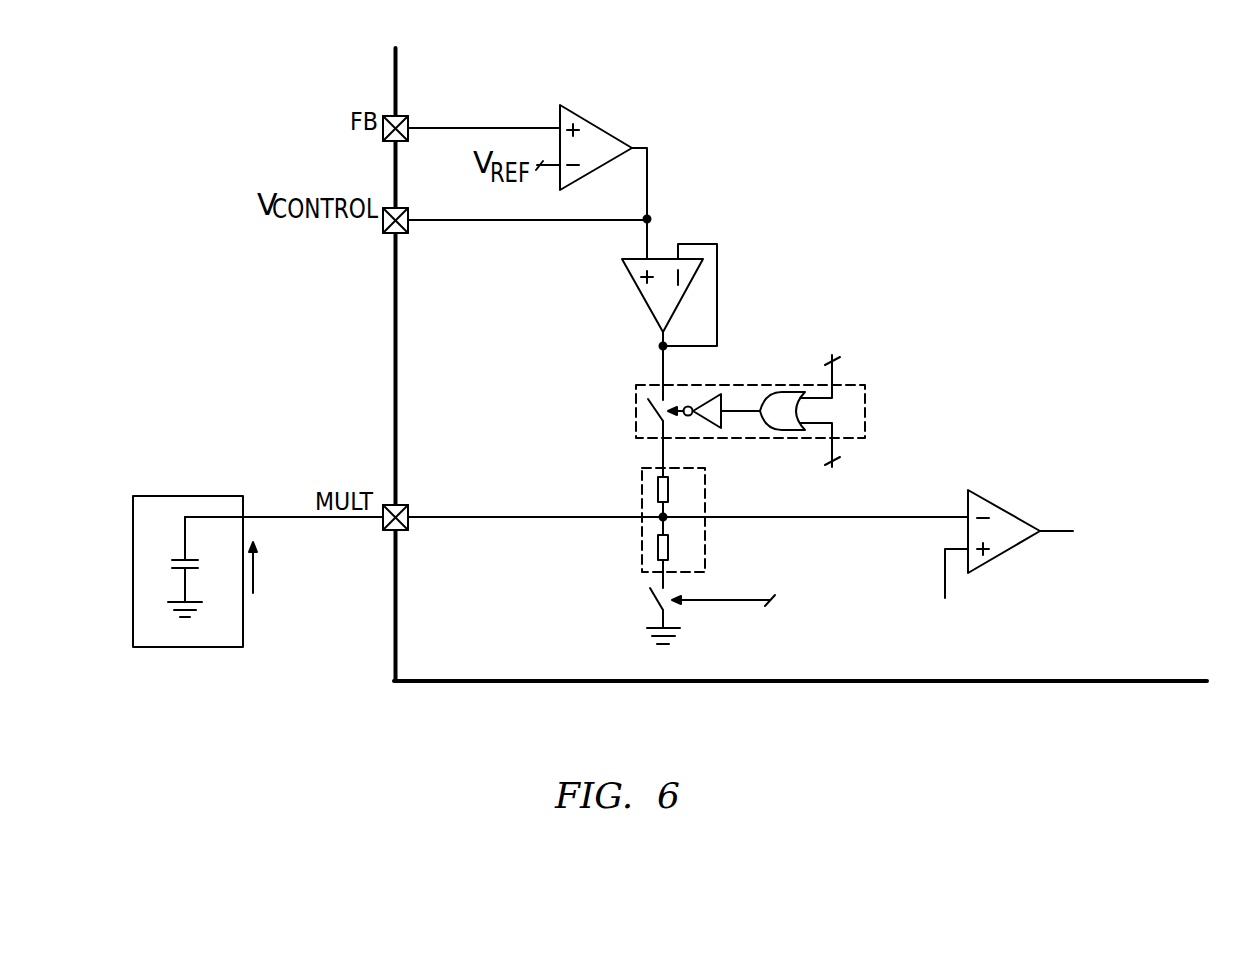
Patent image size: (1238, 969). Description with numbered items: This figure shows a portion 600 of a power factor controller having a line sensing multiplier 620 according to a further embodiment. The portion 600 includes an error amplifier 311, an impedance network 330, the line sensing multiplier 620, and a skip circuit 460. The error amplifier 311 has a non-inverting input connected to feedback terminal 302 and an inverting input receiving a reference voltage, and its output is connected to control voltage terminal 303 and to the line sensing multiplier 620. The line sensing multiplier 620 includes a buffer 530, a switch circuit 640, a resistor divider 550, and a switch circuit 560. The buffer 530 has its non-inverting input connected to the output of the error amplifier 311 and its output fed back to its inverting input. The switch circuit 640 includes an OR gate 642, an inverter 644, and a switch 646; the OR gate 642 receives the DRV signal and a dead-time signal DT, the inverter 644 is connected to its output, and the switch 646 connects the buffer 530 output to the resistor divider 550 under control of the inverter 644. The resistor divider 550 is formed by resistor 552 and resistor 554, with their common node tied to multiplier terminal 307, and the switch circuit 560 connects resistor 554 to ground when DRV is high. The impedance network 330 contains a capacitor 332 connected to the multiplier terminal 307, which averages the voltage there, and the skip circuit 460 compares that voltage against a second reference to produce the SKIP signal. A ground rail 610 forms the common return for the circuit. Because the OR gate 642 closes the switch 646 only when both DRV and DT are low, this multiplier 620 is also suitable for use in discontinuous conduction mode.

The portion 600 is at (216, 199).
The feedback terminal 302 is at (383, 138).
The control voltage terminal 303 is at (385, 231).
The multiplier terminal 307 is at (383, 521).
The error amplifier 311 is at (600, 129).
The impedance network 330 is at (228, 552).
The capacitor 332 is at (190, 560).
The skip circuit 460 is at (985, 495).
The buffer 530 is at (632, 286).
The resistor divider 550 is at (638, 469).
The resistor 552 is at (668, 478).
The resistor 554 is at (658, 548).
The switch circuit 560 is at (650, 598).
The ground rail 610 is at (394, 655).
The line sensing multiplier 620 is at (771, 260).
The switch circuit 640 is at (868, 396).
The OR gate 642 is at (787, 392).
The inverter 644 is at (725, 402).
The switch 646 is at (645, 402).